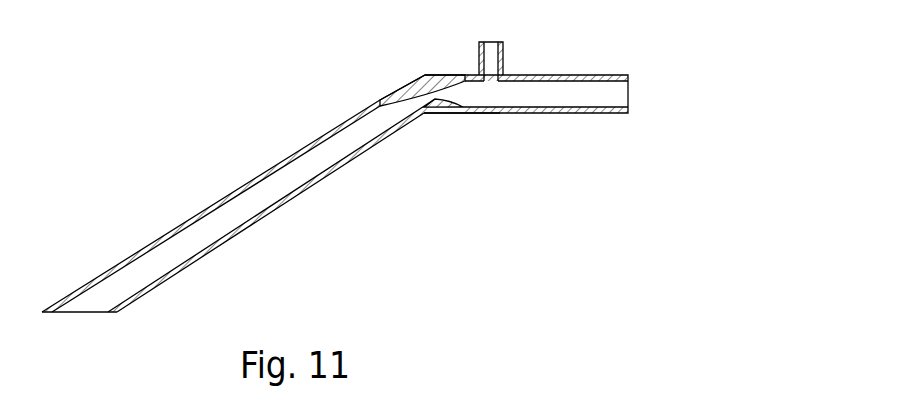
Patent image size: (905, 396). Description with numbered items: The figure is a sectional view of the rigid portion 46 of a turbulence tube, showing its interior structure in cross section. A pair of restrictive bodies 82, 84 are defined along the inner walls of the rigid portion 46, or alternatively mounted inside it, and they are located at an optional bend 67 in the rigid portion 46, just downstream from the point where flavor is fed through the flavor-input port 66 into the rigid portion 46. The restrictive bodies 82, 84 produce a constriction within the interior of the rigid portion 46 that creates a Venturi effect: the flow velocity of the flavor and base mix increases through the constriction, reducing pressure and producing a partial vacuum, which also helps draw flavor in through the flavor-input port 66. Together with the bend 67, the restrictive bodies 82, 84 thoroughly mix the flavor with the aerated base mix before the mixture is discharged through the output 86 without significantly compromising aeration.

The rigid portion 46 is at (283, 142).
The flavor-input port 66 is at (505, 50).
The bend 67 is at (437, 121).
The restrictive body 82 is at (425, 74).
The restrictive body 84 is at (439, 111).
The output 86 is at (93, 295).